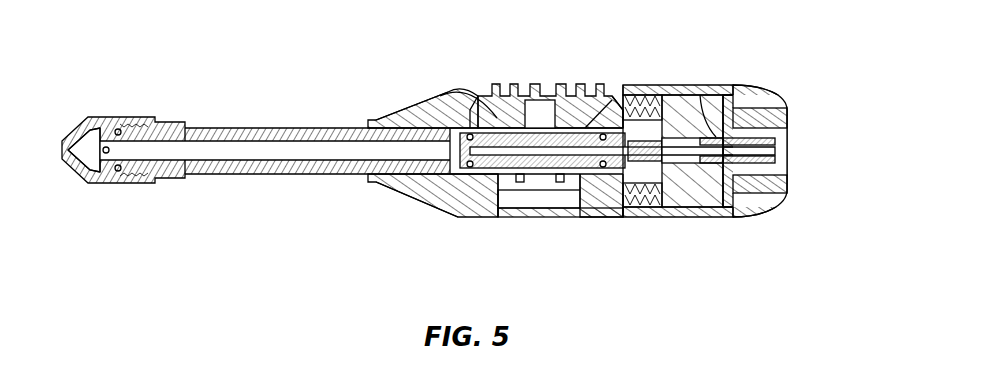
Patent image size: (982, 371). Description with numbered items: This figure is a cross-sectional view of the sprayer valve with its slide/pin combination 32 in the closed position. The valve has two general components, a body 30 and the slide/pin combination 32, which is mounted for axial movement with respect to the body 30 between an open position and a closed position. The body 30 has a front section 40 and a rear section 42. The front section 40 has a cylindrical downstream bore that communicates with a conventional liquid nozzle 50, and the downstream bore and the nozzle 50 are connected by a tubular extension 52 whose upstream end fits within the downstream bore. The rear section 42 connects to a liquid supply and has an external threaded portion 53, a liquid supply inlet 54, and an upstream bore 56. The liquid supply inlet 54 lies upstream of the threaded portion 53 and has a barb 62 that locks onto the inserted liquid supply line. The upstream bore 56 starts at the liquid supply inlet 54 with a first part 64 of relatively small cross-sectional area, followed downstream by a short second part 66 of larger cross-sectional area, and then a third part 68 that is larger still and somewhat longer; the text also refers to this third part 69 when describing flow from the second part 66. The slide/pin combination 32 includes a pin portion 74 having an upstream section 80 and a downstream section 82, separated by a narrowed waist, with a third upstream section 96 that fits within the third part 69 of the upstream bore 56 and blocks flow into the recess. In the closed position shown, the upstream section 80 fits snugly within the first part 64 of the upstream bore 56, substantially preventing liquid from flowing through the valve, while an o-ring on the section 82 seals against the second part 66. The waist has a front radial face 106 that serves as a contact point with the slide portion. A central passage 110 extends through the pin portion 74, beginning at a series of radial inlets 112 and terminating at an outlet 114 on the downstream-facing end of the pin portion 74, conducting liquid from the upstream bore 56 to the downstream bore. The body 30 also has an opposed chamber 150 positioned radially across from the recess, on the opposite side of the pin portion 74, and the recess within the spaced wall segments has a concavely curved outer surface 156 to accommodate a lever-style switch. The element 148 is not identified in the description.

The body 30 is at (414, 212).
The slide/pin combination 32 is at (524, 84).
The front section 40 is at (407, 190).
The rear section 42 is at (706, 205).
The liquid nozzle 50 is at (118, 116).
The tubular extension 52 is at (256, 128).
The external threaded portion 53 is at (640, 212).
The liquid supply inlet 54 is at (778, 151).
The upstream bore 56 is at (730, 134).
The barb 62 is at (733, 190).
The first part of the upstream bore 64 is at (773, 197).
The second part of the upstream bore 66 is at (617, 108).
The third part of the upstream bore 68 is at (602, 100).
The third part of the upstream bore 69 is at (605, 176).
The pin portion 74 is at (539, 184).
The upstream section 80 is at (680, 86).
The downstream section 82 is at (587, 178).
The third upstream section 96 is at (573, 98).
The front radial face 106 is at (505, 192).
The central passage 110 is at (443, 166).
The radial inlets 112 is at (627, 178).
The outlet 114 is at (405, 113).
The dome collar 148 is at (445, 126).
The opposed chamber 150 is at (523, 190).
The concavely curved outer surface 156 is at (450, 93).